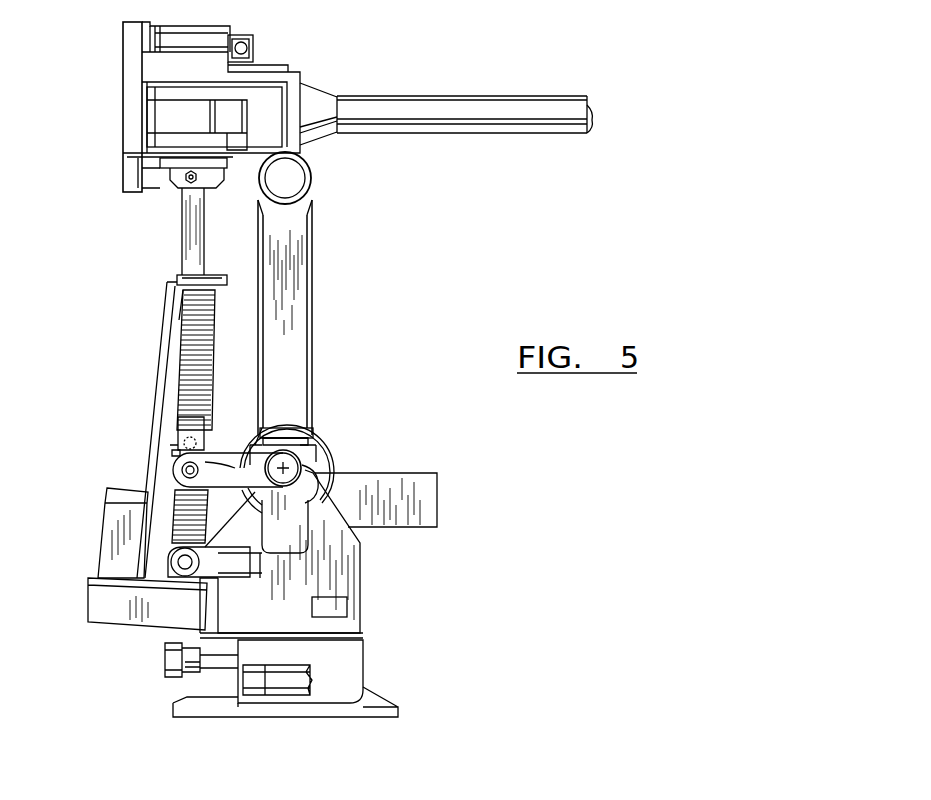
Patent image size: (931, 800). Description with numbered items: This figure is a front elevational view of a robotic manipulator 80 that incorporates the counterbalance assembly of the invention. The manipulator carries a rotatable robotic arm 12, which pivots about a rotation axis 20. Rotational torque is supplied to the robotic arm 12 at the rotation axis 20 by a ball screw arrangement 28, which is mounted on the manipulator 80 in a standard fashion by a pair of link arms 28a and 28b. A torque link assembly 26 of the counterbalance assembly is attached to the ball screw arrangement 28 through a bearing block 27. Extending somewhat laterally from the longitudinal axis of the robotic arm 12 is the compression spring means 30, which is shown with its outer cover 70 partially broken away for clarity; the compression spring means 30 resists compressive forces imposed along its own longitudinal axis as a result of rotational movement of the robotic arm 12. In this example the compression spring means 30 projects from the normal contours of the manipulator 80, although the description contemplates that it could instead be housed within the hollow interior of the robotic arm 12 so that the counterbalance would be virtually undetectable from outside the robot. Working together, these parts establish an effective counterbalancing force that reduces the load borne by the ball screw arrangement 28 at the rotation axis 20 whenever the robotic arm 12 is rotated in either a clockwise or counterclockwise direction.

The robotic arm 12 is at (293, 273).
The rotation axis 20 is at (286, 466).
The torque link assembly 26 is at (242, 413).
The bearing block 27 is at (175, 441).
The ball screw arrangement 28 is at (188, 427).
The link arm 28a is at (200, 572).
The link arm 28b is at (233, 467).
The compression spring means 30 is at (404, 473).
The outer cover 70 is at (437, 498).
The robotic manipulator 80 is at (393, 297).